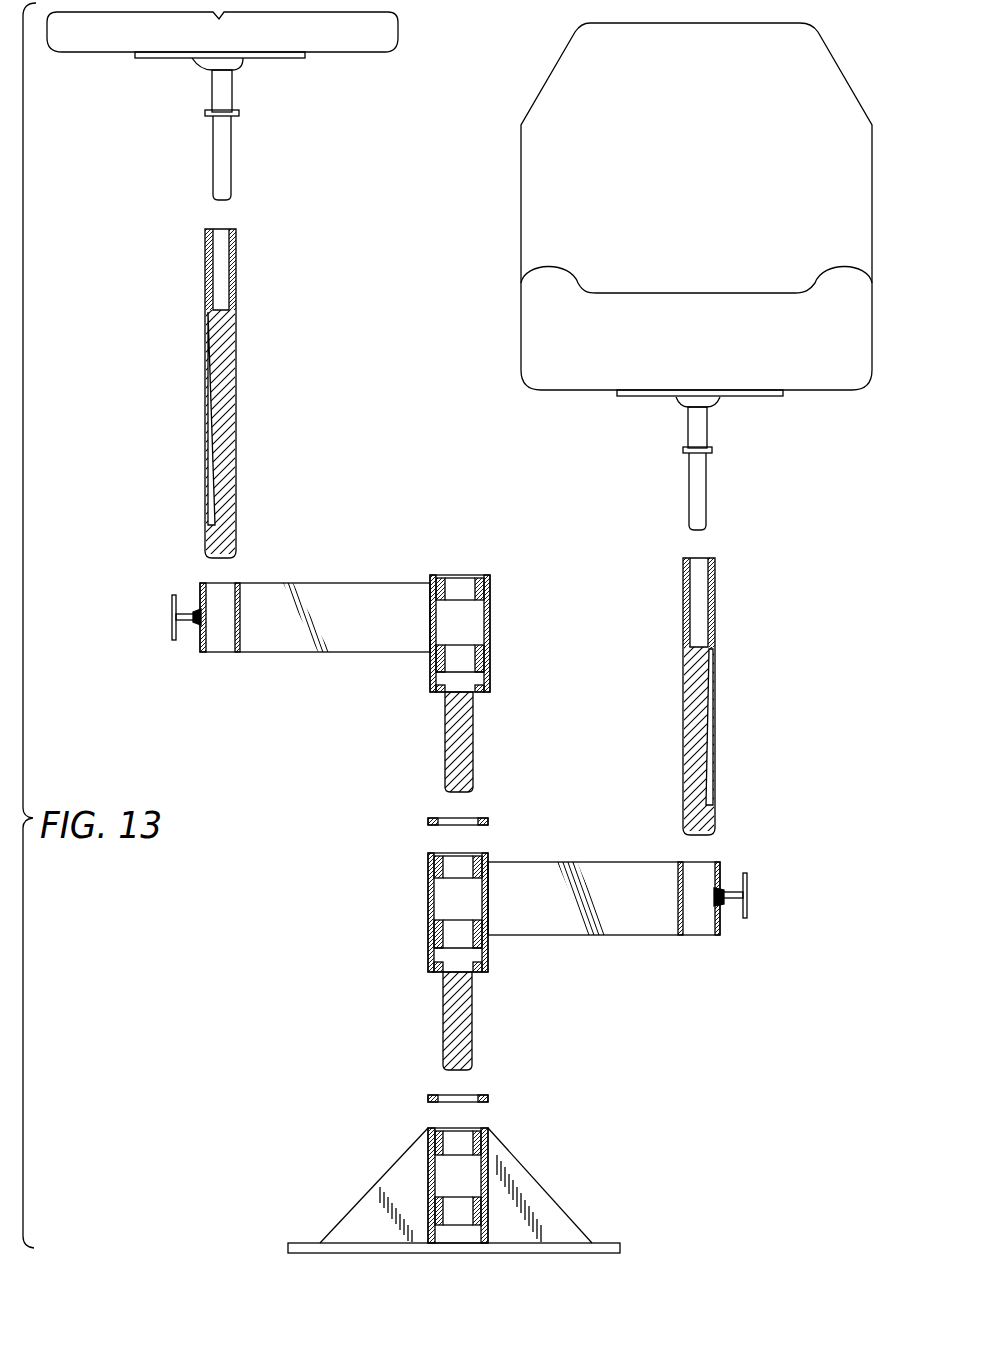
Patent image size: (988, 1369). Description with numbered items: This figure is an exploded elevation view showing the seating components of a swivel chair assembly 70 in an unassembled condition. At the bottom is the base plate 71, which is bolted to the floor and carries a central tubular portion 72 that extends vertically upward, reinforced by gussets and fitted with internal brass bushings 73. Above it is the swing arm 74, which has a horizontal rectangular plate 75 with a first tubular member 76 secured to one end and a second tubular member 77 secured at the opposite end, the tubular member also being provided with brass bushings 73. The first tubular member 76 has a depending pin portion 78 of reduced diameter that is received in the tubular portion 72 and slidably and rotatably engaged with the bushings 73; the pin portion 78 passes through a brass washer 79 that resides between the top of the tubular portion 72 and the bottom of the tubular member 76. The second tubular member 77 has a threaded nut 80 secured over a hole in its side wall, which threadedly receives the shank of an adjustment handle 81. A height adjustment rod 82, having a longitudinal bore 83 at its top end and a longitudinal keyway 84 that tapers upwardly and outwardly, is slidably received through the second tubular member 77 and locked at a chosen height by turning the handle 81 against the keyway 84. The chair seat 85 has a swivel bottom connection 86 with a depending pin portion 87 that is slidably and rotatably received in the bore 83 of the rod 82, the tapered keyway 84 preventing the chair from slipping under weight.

The swivel chair assembly 70 is at (153, 213).
The base plate 71 is at (580, 1243).
The central tubular portion 72 is at (497, 1172).
The internal brass bushings 73 is at (455, 580).
The swing arm 74 is at (314, 561).
The horizontal rectangular plate 75 is at (354, 645).
The first tubular member 76 is at (490, 615).
The second tubular member 77 is at (198, 645).
The depending pin portion 78 is at (475, 745).
The brass washer 79 is at (490, 820).
The threaded nut 80 is at (198, 610).
The adjustment handle 81 is at (170, 604).
The height adjustment rod 82 is at (237, 390).
The longitudinal bore 83 is at (227, 277).
The longitudinal keyway 84 is at (207, 507).
The chair seat 85 is at (377, 43).
The swivel bottom connection 86 is at (243, 60).
The depending pin portion 87 is at (232, 145).